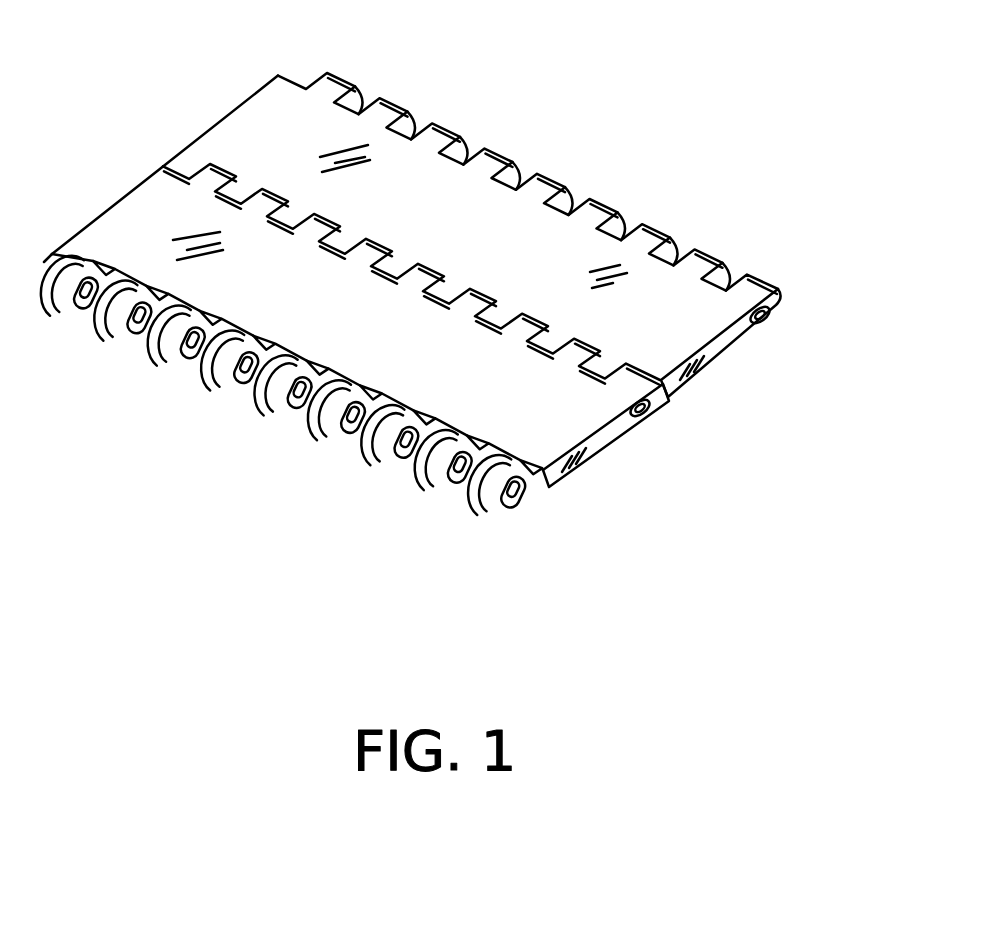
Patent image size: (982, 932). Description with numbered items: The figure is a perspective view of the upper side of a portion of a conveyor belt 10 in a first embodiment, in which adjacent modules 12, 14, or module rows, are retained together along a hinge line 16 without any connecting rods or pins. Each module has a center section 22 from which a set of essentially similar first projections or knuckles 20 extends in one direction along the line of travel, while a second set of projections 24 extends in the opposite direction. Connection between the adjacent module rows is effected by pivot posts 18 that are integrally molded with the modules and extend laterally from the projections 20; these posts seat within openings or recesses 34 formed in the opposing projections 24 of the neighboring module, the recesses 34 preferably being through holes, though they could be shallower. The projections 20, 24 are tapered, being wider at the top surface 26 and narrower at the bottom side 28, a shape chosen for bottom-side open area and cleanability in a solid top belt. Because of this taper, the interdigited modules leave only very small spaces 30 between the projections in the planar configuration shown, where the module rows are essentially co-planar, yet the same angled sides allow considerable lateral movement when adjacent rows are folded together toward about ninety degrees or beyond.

The belt 10 is at (445, 303).
The module 12 is at (708, 360).
The module 14 is at (590, 456).
The hinge line 16 is at (130, 146).
The pivot post 18 is at (185, 352).
The projection 20 is at (104, 330).
The center section 22 is at (547, 257).
The projection 24 is at (398, 122).
The top surface 26 is at (497, 456).
The bottom side 28 is at (489, 519).
The space 30 is at (262, 193).
The recess 34 is at (773, 316).